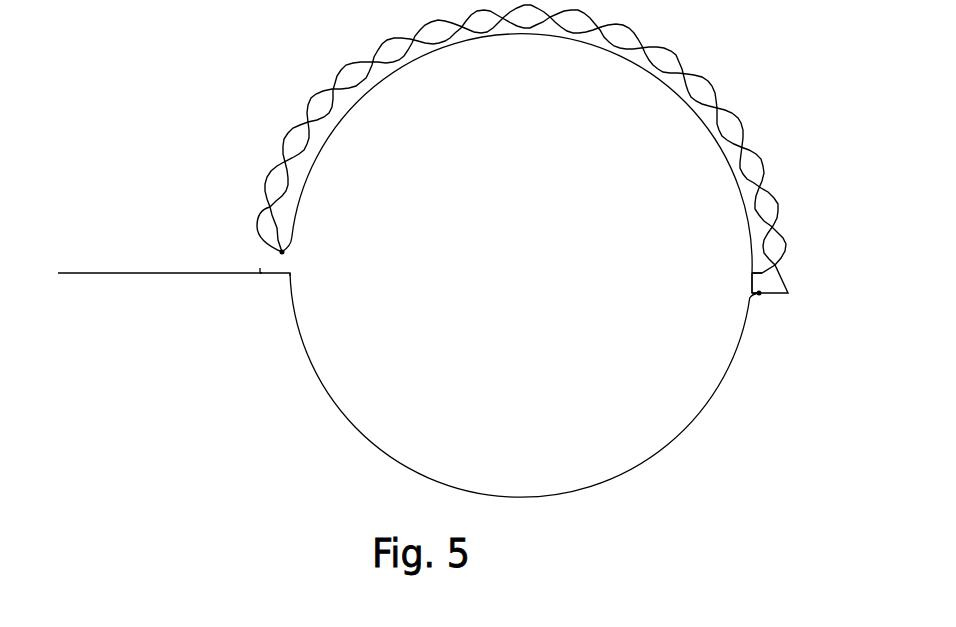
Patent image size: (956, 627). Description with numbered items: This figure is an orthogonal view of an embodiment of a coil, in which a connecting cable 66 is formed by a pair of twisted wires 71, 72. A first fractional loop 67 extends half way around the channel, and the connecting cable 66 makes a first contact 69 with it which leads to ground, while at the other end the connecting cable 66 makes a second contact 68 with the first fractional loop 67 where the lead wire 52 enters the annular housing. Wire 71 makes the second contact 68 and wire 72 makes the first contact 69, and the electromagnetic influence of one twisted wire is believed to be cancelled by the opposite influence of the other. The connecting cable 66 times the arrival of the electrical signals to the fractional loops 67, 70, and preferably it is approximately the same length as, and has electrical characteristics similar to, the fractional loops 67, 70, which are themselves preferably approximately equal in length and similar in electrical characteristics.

The lead wire 52 is at (117, 274).
The connecting cable 66 is at (705, 47).
The first fractional loop 67 is at (700, 422).
The second contact 68 is at (260, 276).
The first contact 69 is at (750, 293).
The fractional loop 70 is at (630, 62).
The twisted wire 71 is at (260, 272).
The twisted wire 72 is at (257, 224).